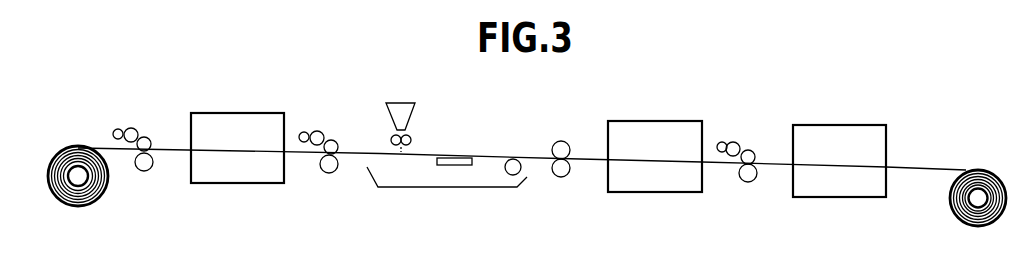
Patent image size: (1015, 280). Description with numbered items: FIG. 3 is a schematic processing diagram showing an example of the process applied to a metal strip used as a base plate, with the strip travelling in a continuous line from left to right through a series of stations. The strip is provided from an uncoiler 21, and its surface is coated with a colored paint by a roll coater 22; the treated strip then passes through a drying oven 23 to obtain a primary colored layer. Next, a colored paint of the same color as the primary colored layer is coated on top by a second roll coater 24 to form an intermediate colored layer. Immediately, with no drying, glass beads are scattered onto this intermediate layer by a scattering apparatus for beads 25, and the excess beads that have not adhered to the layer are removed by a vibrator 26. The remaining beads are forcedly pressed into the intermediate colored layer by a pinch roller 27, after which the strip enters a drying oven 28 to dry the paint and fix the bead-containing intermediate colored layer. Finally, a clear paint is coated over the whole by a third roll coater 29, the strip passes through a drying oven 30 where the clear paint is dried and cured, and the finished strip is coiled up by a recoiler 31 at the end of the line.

The uncoiler 21 is at (79, 200).
The roll coater 22 is at (144, 166).
The drying oven 23 is at (230, 178).
The roll coater 24 is at (326, 168).
The scattering apparatus for beads 25 is at (410, 115).
The vibrator 26 is at (455, 167).
The pinch roller 27 is at (559, 177).
The drying oven 28 is at (653, 187).
The roll coater 29 is at (745, 180).
The drying oven 30 is at (833, 192).
The recoiler 31 is at (960, 218).